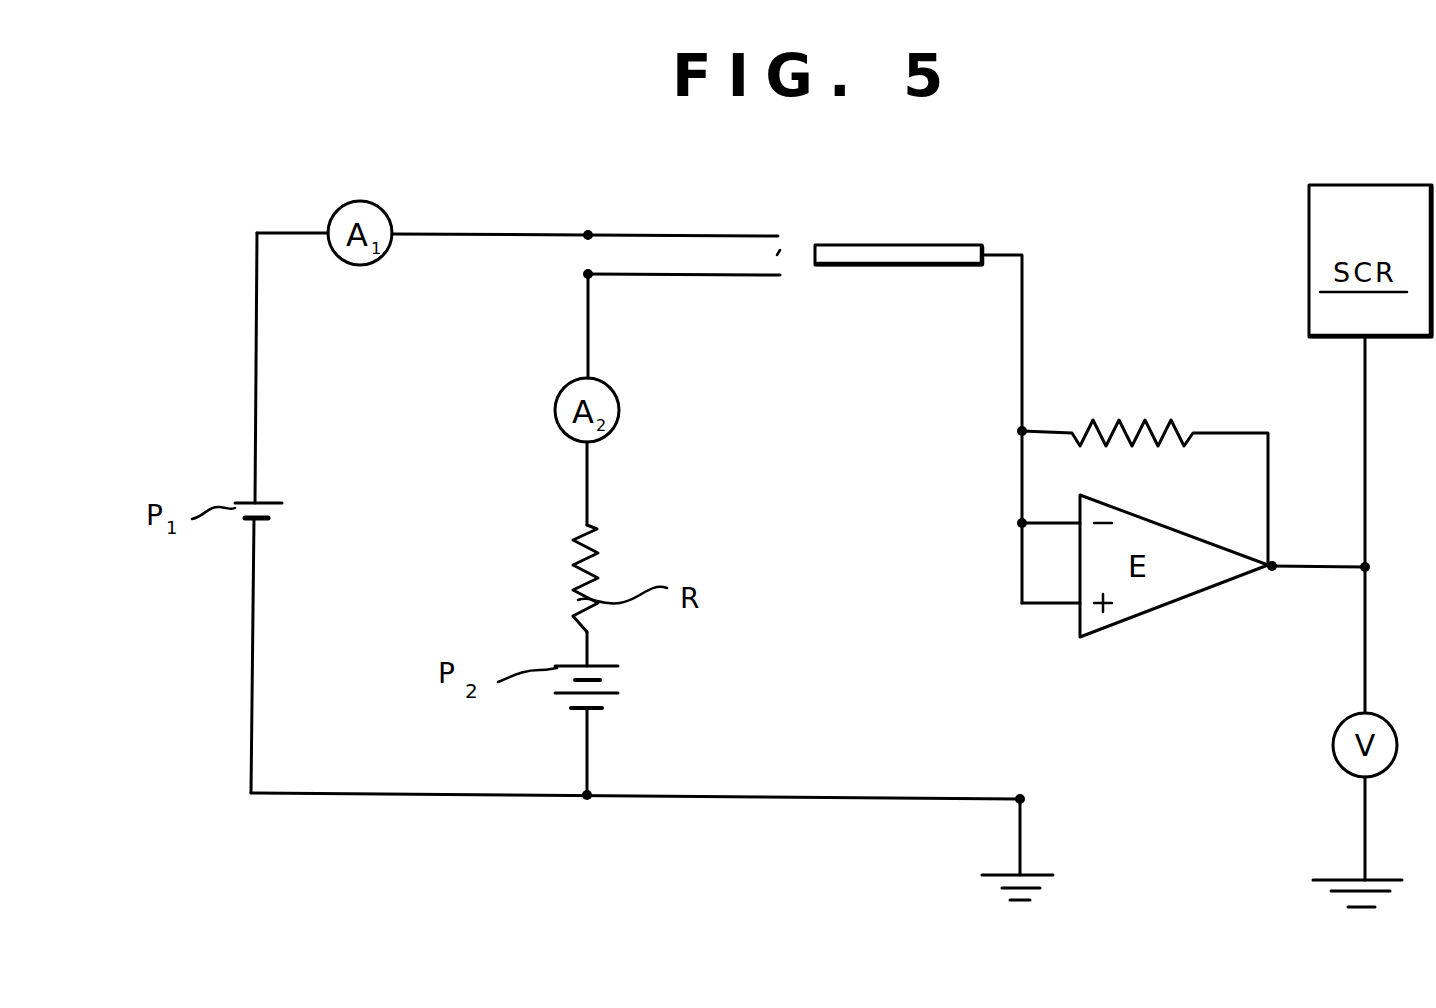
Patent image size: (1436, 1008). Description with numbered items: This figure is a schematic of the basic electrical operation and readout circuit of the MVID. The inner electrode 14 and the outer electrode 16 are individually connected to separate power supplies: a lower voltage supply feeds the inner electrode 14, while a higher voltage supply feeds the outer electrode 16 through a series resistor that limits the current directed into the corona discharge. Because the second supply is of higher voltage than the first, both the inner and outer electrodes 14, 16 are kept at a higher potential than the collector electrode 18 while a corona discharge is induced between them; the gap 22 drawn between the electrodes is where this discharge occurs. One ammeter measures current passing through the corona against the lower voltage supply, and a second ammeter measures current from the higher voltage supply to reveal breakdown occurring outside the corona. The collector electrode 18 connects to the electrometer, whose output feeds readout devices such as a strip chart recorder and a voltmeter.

The inner electrode 14 is at (742, 232).
The outer electrode 16 is at (722, 277).
The collector electrode 18 is at (908, 258).
The gap 22 is at (778, 255).